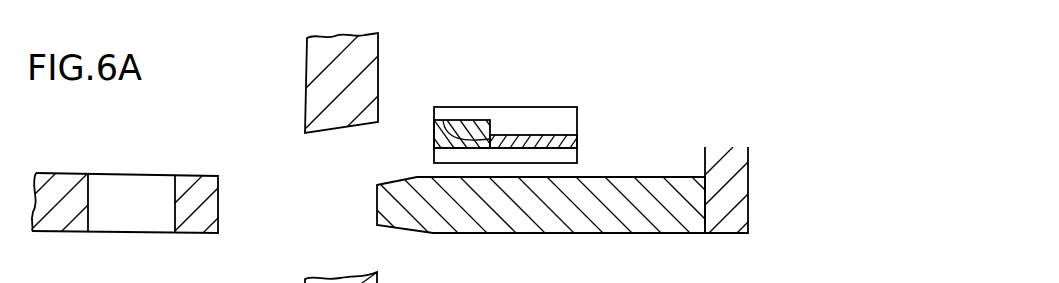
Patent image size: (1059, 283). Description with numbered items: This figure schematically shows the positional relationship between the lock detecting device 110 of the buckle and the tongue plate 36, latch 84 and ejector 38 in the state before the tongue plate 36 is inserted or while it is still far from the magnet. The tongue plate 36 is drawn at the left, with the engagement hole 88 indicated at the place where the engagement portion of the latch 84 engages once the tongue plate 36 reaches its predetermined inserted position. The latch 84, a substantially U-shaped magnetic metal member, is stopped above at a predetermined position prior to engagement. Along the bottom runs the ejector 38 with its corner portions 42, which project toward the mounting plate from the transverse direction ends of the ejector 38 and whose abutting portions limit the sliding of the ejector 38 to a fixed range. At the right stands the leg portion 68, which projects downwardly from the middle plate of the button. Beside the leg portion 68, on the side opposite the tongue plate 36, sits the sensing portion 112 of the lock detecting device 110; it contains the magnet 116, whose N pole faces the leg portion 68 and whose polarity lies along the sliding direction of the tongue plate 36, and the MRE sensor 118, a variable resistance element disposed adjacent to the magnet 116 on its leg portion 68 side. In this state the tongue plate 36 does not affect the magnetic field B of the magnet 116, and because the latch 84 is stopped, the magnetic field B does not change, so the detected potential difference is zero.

The tongue plate 36 is at (72, 173).
The engagement hole 88 is at (88, 217).
The latch 84 is at (305, 98).
The corner portions 42 is at (508, 234).
The ejector 38 is at (546, 228).
The leg portion 68 is at (683, 228).
The sensing portion 112 is at (572, 112).
The lock detecting device 110 is at (572, 112).
The MRE sensor 118 is at (472, 120).
The magnet 116 is at (548, 135).
The magnetic field B is at (449, 98).